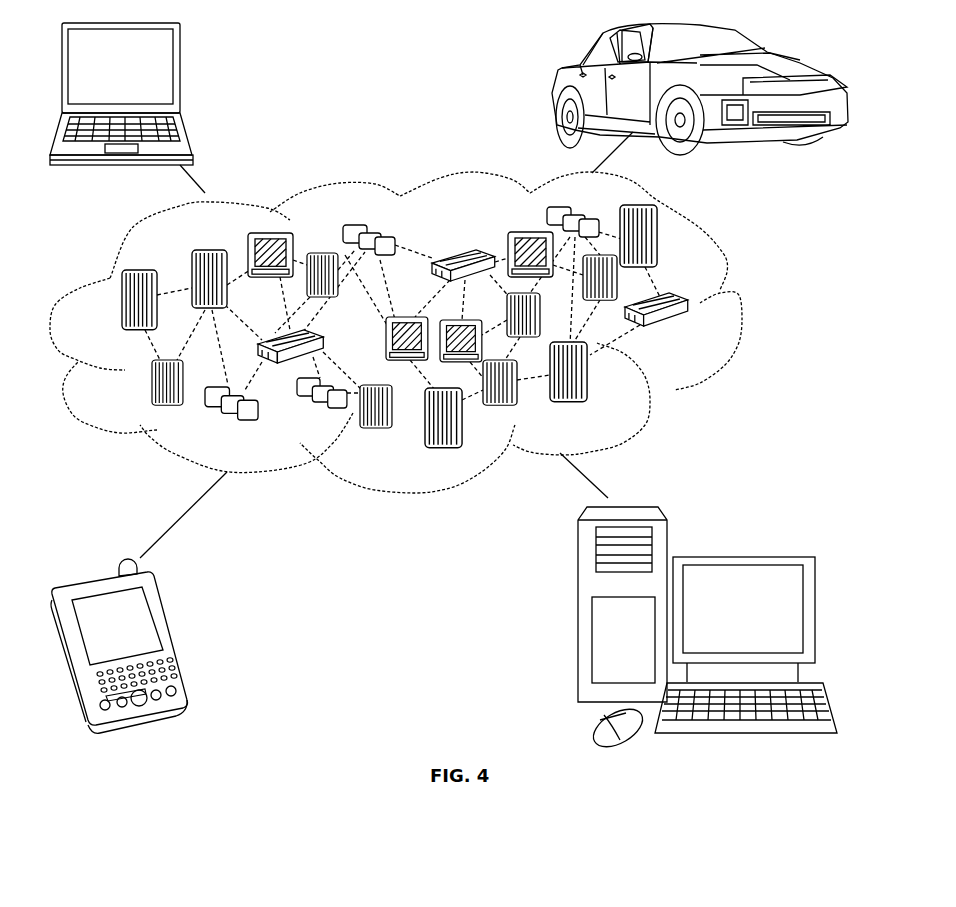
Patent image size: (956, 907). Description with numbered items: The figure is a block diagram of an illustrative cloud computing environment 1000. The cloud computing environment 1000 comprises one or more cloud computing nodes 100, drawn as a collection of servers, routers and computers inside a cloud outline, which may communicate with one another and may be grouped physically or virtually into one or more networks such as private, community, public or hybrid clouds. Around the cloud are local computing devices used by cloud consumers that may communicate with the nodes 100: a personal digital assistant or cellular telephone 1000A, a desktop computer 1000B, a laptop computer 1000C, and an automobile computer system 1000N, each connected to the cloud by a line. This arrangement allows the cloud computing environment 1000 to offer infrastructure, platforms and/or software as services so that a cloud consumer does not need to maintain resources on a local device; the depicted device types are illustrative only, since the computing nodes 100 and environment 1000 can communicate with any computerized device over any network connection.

The cloud computing nodes 100 is at (700, 336).
The cloud computing environment 1000 is at (740, 310).
The personal digital assistant (PDA) or cellular telephone 1000A is at (173, 637).
The desktop computer 1000B is at (742, 553).
The laptop computer 1000C is at (180, 73).
The automobile computer system 1000N is at (553, 90).